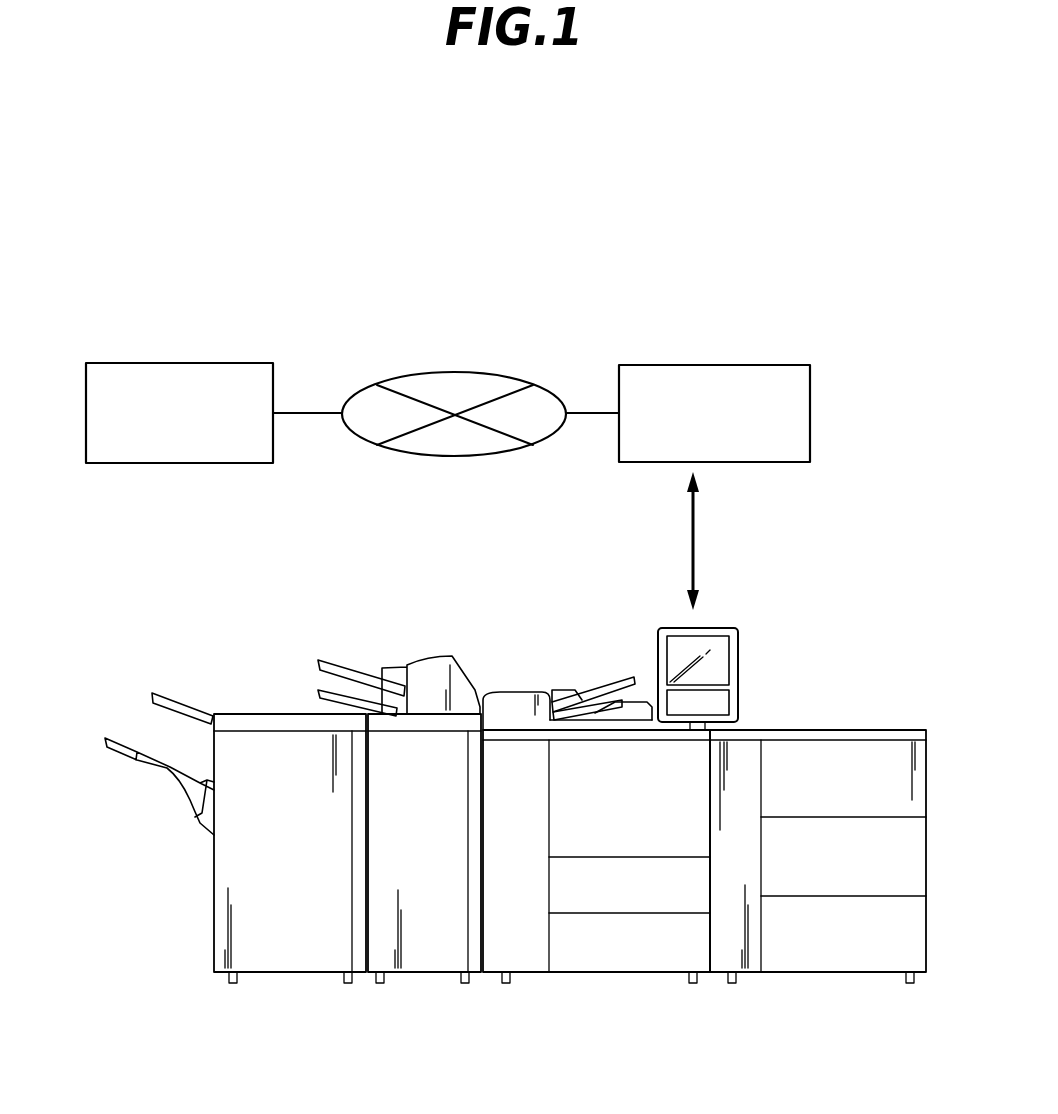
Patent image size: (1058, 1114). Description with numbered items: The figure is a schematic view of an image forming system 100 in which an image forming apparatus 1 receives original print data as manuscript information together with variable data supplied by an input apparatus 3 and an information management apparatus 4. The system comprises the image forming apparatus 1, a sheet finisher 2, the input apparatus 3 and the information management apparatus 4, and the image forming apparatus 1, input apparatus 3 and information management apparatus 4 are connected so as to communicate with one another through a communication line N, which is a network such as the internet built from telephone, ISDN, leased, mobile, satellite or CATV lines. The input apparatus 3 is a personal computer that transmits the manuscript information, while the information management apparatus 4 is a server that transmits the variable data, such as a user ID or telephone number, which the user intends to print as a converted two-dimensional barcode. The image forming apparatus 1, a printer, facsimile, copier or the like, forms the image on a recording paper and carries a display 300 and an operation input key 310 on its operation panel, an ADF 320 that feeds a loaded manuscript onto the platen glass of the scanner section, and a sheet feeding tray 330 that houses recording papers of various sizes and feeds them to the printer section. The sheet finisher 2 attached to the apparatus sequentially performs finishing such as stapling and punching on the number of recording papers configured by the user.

The image forming system 100 is at (609, 245).
The image forming apparatus 1 is at (591, 600).
The sheet finisher 2 is at (263, 720).
The input apparatus 3 is at (742, 365).
The information management apparatus 4 is at (239, 363).
The communication line N is at (497, 372).
The display 300 is at (716, 645).
The operation input key 310 is at (722, 703).
The ADF 320 is at (528, 693).
The sheet feeding tray 330 is at (622, 885).